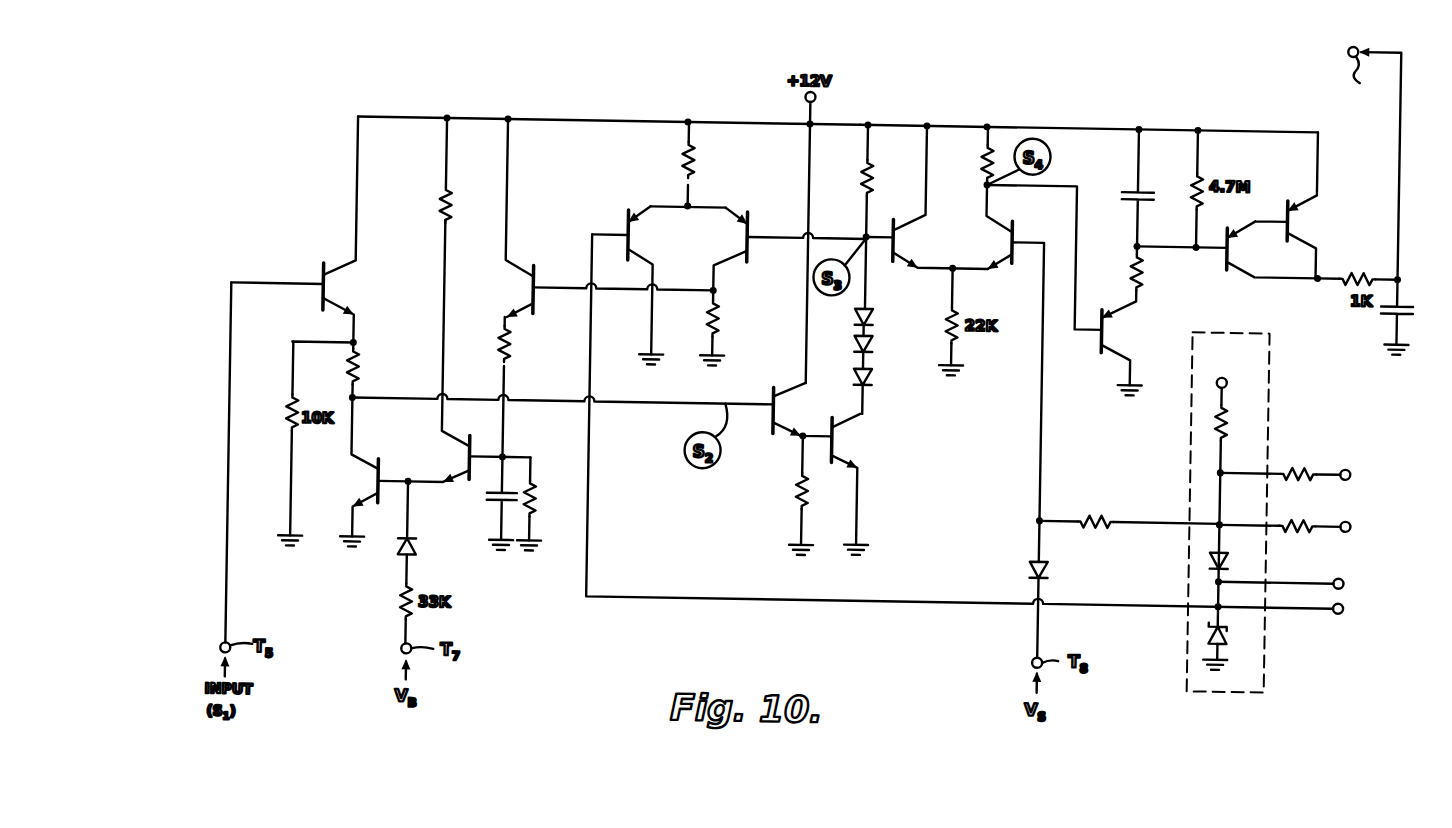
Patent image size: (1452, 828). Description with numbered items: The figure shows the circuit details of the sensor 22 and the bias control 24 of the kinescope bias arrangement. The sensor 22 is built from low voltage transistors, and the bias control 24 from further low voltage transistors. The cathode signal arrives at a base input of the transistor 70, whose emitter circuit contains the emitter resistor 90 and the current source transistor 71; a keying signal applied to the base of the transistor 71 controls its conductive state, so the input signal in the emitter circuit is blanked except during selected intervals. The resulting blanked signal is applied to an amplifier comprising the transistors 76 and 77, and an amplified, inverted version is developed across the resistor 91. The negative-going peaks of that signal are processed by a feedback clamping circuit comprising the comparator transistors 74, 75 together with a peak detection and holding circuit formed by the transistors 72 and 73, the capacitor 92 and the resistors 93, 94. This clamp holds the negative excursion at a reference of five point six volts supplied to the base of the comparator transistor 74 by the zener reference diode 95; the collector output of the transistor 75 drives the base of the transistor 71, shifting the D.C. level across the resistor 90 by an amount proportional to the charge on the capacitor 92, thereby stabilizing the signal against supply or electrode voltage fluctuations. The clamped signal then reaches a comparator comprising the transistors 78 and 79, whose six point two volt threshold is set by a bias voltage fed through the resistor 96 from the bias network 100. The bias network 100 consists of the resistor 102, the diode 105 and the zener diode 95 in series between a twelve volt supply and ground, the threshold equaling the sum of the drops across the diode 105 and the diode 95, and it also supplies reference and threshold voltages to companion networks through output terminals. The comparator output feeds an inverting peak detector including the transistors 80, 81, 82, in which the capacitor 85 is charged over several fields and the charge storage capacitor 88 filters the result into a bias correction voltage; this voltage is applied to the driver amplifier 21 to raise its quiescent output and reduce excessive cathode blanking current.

The driver amplifier 21 is at (1327, 155).
The sensor 22 is at (561, 108).
The bias control 24 is at (1193, 108).
The transistor 70 is at (380, 302).
The current source transistor 71 is at (366, 496).
The transistor 72 is at (455, 466).
The transistor 73 is at (517, 305).
The comparator transistor 74 is at (678, 246).
The comparator transistor 75 is at (728, 246).
The transistor 76 is at (826, 410).
The transistor 77 is at (888, 443).
The comparator transistor 78 is at (943, 250).
The comparator transistor 79 is at (998, 250).
The transistor 80 is at (1162, 337).
The peak detector transistor 81 is at (1272, 253).
The peak detector transistor 82 is at (1336, 225).
The capacitor 85 is at (1145, 190).
The charge storage capacitor 88 is at (1414, 298).
The emitter resistor 90 is at (362, 379).
The resistor 91 is at (861, 179).
The capacitor 92 is at (493, 502).
The resistor 93 is at (516, 352).
The resistor 94 is at (541, 488).
The zener reference diode 95 is at (1230, 654).
The resistor 96 is at (1106, 511).
The bias network 100 is at (1273, 385).
The resistor 102 is at (1228, 435).
The diode 105 is at (1233, 555).